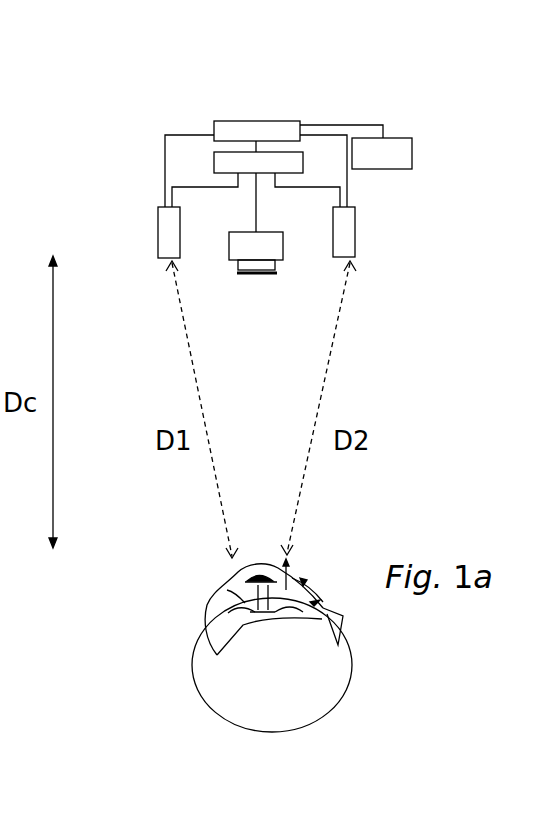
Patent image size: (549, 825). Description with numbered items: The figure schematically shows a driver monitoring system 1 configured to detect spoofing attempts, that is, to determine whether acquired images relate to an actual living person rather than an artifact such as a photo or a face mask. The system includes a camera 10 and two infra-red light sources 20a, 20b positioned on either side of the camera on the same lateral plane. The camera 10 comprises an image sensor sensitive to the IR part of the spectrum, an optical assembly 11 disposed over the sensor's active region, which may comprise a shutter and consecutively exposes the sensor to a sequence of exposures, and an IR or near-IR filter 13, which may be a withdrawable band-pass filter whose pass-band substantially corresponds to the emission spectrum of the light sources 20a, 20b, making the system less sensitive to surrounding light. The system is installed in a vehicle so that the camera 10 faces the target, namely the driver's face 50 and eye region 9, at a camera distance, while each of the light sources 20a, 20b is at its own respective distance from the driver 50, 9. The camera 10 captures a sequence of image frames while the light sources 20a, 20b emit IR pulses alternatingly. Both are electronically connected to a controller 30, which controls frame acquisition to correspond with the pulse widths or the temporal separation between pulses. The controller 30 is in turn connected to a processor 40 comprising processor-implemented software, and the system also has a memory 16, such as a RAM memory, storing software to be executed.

The DMS system 1 is at (407, 99).
The processor 40 is at (230, 131).
The controller 30 is at (298, 159).
The RAM memory 16 is at (412, 158).
The infra-red light source 20a is at (180, 227).
The infra-red light source 20b is at (333, 227).
The camera 10 is at (280, 248).
The optical assembly 11 is at (239, 264).
The IR filter 13 is at (257, 277).
The driver's face 50 is at (270, 720).
The driver's eye region 9 is at (230, 586).